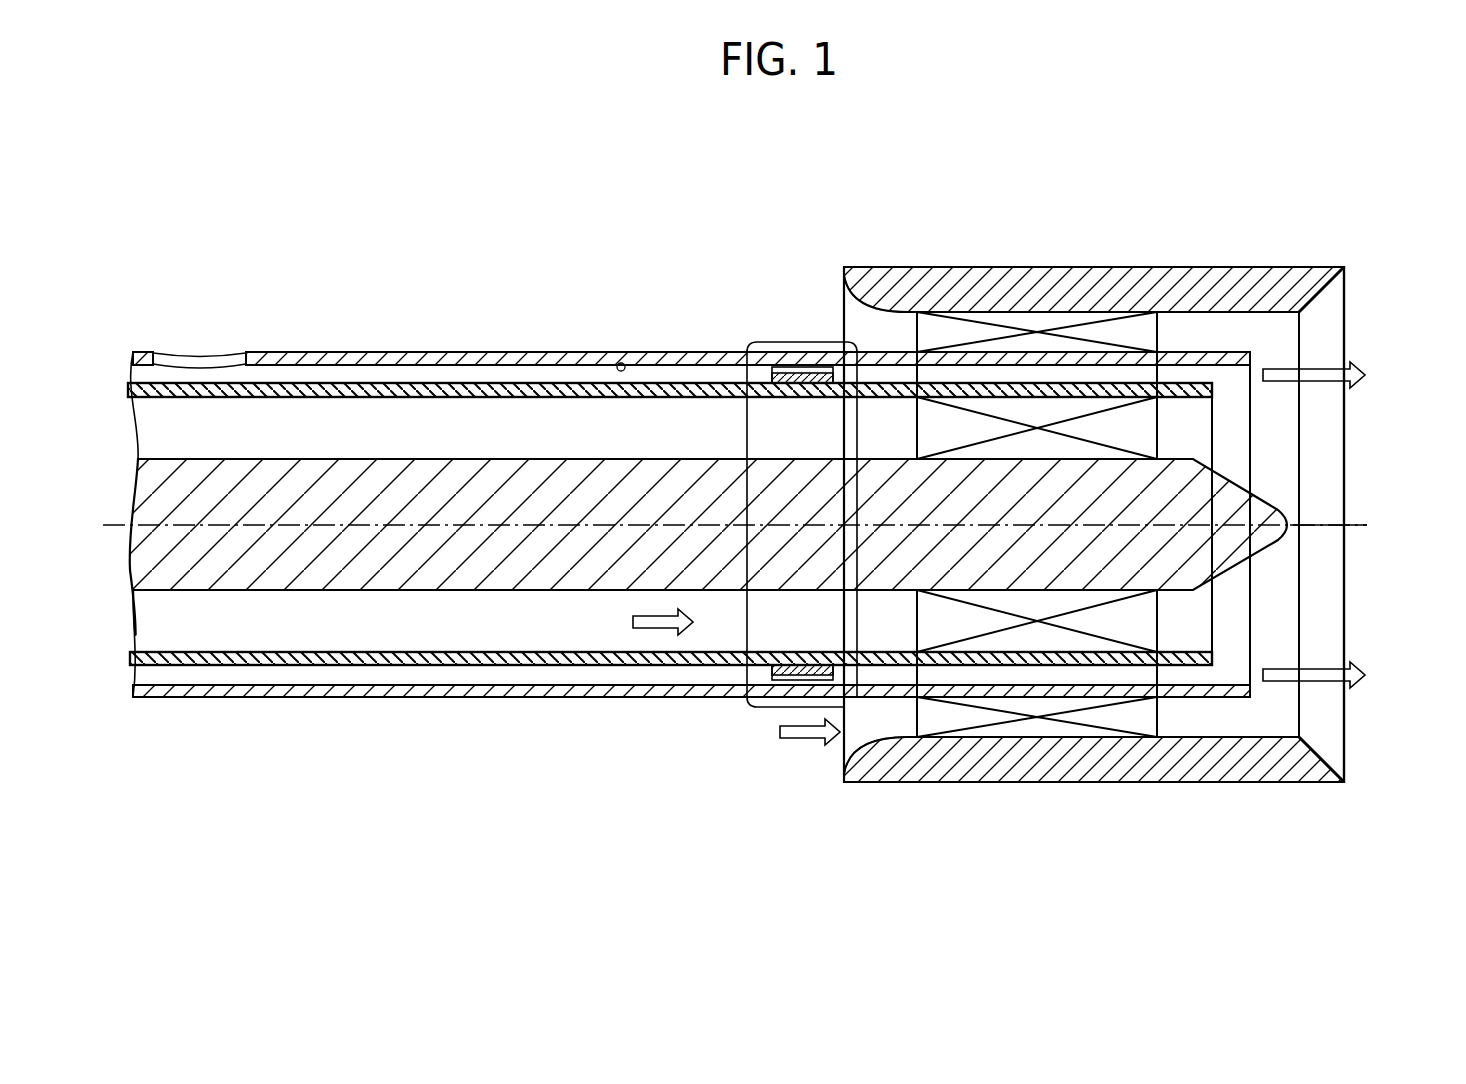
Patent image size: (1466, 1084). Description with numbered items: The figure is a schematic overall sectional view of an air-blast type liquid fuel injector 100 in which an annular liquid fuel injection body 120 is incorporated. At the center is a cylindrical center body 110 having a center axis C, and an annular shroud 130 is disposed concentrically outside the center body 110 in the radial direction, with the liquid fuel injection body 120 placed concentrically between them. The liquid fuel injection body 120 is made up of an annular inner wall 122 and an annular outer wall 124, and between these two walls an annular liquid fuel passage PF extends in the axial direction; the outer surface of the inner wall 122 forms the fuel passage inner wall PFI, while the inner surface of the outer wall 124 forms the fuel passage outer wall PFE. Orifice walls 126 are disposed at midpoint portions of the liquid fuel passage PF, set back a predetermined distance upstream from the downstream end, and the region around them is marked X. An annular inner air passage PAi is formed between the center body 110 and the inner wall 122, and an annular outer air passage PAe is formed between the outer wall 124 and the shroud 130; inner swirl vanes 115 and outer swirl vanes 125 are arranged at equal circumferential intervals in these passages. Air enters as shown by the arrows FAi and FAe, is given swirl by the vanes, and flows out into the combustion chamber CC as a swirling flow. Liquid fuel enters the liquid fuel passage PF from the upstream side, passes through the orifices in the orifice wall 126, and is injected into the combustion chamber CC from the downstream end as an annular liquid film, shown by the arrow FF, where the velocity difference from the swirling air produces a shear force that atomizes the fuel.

The liquid fuel injector 100 is at (1293, 246).
The center body 110 is at (537, 570).
The inner swirl vanes 115 is at (1158, 623).
The liquid fuel injection body 120 is at (689, 471).
The inner wall 122 is at (400, 378).
The outer wall 124 is at (685, 360).
The outer swirl vanes 125 is at (1158, 718).
The orifice wall 126 is at (770, 375).
The shroud 130 is at (988, 760).
The detail region X is at (795, 340).
The center axis C is at (748, 526).
The combustion chamber CC is at (1463, 541).
The liquid fuel passage PF is at (467, 378).
The fuel passage inner wall PFI is at (535, 378).
The fuel passage outer wall PFE is at (619, 363).
The inner air passage PAi is at (816, 638).
The outer air passage PAe is at (906, 733).
The inner air flow arrow FAi is at (639, 623).
The outer air flow arrow FAe is at (783, 731).
The liquid fuel injection arrow FF is at (1334, 526).